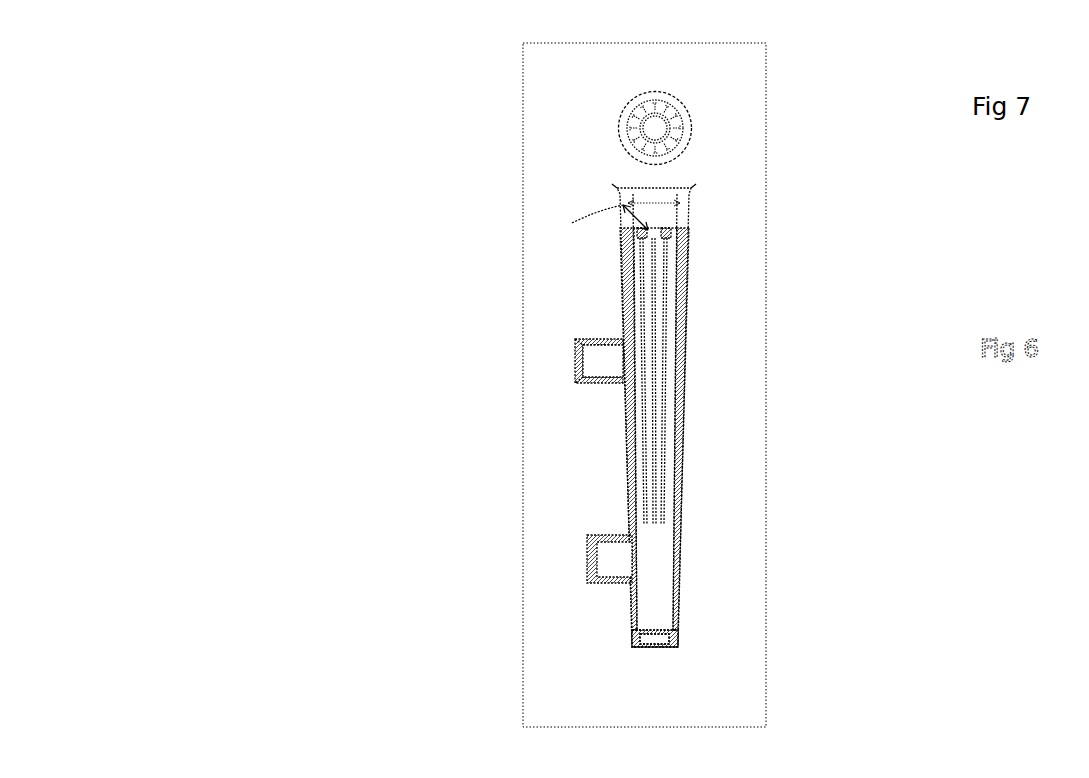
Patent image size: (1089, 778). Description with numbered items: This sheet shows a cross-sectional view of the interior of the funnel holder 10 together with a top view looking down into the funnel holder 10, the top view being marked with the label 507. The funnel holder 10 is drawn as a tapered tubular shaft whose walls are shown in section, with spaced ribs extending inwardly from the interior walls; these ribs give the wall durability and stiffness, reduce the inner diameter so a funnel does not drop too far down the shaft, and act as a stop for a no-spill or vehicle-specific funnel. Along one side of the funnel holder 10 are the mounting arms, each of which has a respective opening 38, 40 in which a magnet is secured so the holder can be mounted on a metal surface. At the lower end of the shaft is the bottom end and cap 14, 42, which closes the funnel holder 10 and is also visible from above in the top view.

In FIG. 7, the cross-sectional view of tube handle 507 is at (655, 107).
In FIG. 6, the funnel holder 10 is at (689, 394).
In FIG. 6, the opening 38 is at (566, 364).
In FIG. 6, the opening 40 is at (573, 562).
In FIG. 6, the bottom end 14 is at (643, 653).
In FIG. 6, the cap 42 is at (655, 638).